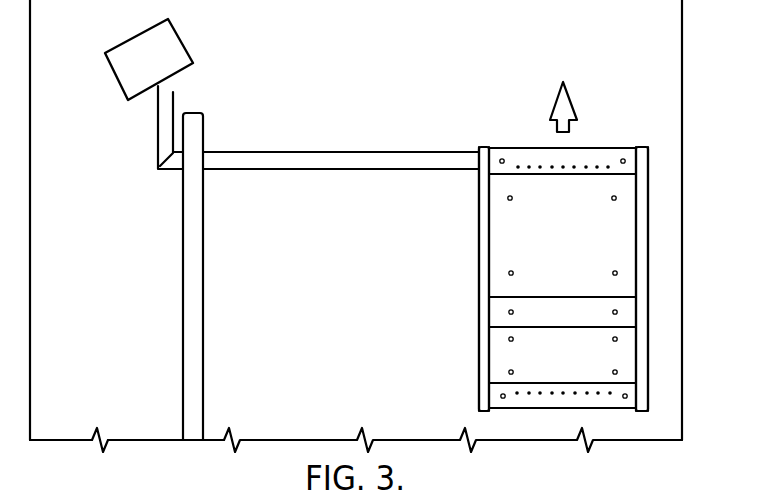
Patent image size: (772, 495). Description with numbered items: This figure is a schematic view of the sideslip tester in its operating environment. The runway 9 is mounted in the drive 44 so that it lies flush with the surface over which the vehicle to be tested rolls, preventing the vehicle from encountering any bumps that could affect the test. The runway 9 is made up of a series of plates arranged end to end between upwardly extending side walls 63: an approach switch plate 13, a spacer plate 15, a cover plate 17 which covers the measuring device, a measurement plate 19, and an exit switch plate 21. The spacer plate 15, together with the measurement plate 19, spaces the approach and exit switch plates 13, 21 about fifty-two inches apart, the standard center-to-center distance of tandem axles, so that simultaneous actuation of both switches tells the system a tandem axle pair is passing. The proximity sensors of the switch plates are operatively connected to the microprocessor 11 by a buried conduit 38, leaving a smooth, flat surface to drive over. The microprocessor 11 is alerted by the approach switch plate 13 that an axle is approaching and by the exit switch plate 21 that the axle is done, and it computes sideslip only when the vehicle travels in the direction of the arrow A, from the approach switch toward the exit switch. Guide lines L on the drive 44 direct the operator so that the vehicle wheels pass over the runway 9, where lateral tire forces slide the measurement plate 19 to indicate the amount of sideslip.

The runway 9 is at (478, 259).
The microprocessor 11 is at (183, 42).
The approach switch plate 13 is at (534, 409).
The spacer plate 15 is at (620, 359).
The cover plate 17 is at (626, 310).
The measurement plate 19 is at (612, 229).
The exit switch plate 21 is at (590, 156).
The conduit 38 is at (282, 159).
The drive 44 is at (539, 424).
The side walls 63 is at (479, 272).
The guide lines L is at (203, 295).
The arrow A is at (566, 113).